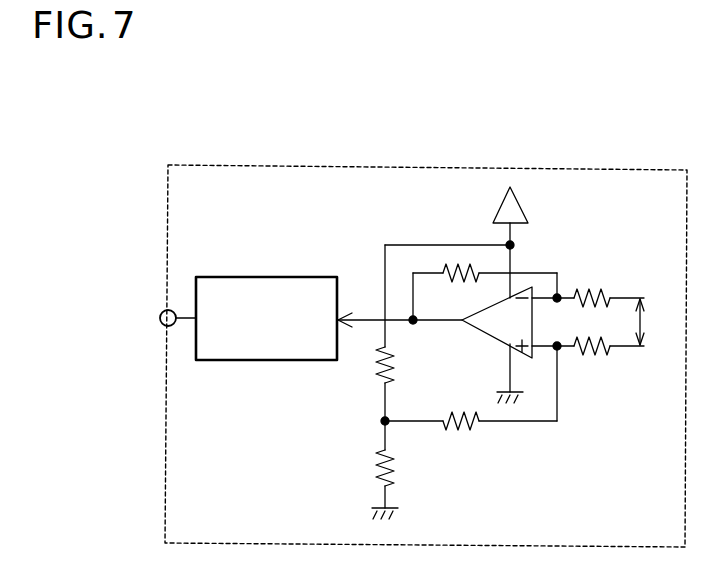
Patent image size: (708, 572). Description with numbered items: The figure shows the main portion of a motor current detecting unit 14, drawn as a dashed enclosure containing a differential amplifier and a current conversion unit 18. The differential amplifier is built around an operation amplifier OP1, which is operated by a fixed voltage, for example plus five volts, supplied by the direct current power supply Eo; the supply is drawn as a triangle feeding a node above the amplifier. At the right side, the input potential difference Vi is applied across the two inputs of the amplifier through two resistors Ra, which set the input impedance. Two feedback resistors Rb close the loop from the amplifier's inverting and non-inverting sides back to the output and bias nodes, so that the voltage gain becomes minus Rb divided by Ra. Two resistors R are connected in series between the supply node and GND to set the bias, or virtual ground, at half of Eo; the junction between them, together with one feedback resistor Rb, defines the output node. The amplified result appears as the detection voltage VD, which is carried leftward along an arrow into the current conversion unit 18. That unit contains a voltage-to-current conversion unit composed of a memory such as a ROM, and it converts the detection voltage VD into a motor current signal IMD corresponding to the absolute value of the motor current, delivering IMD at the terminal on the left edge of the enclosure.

The motor current detecting unit 14 is at (440, 167).
The current conversion unit 18 is at (275, 277).
The operation amplifier OP1 is at (498, 328).
The resistor for setting an input impedance Ra is at (588, 328).
The feedback resistor Rb is at (471, 364).
The resistor for setting a bias R is at (395, 376).
The ground GND is at (411, 511).
The direct current power supply Eo is at (523, 242).
The potential difference Vi is at (654, 322).
The detection voltage VD is at (399, 305).
The motor current signal IMD is at (165, 314).